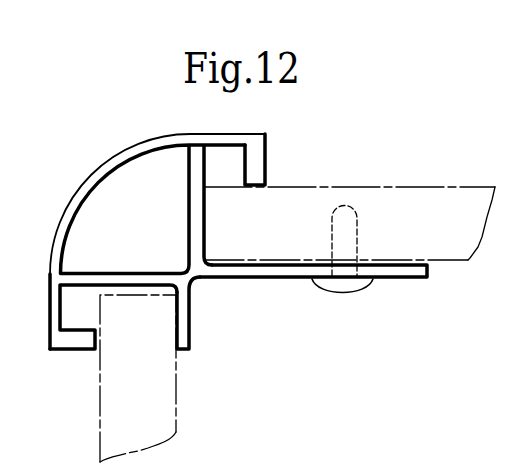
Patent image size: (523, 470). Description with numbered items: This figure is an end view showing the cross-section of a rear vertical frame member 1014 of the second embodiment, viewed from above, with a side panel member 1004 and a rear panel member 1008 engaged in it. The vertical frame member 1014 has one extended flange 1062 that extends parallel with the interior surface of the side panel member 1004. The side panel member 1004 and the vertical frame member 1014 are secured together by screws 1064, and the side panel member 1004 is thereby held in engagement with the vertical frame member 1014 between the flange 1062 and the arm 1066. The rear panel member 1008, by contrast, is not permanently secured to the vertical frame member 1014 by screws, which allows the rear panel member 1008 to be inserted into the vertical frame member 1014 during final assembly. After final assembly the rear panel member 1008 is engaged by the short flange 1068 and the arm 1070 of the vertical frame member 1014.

The vertical frame member 1014 is at (88, 162).
The arm 1066 is at (255, 153).
The arm 1070 is at (65, 350).
The short flange 1068 is at (191, 343).
The extended flange 1062 is at (260, 279).
The side panel member 1004 is at (452, 171).
The screws 1064 is at (348, 287).
The rear panel member 1008 is at (113, 399).